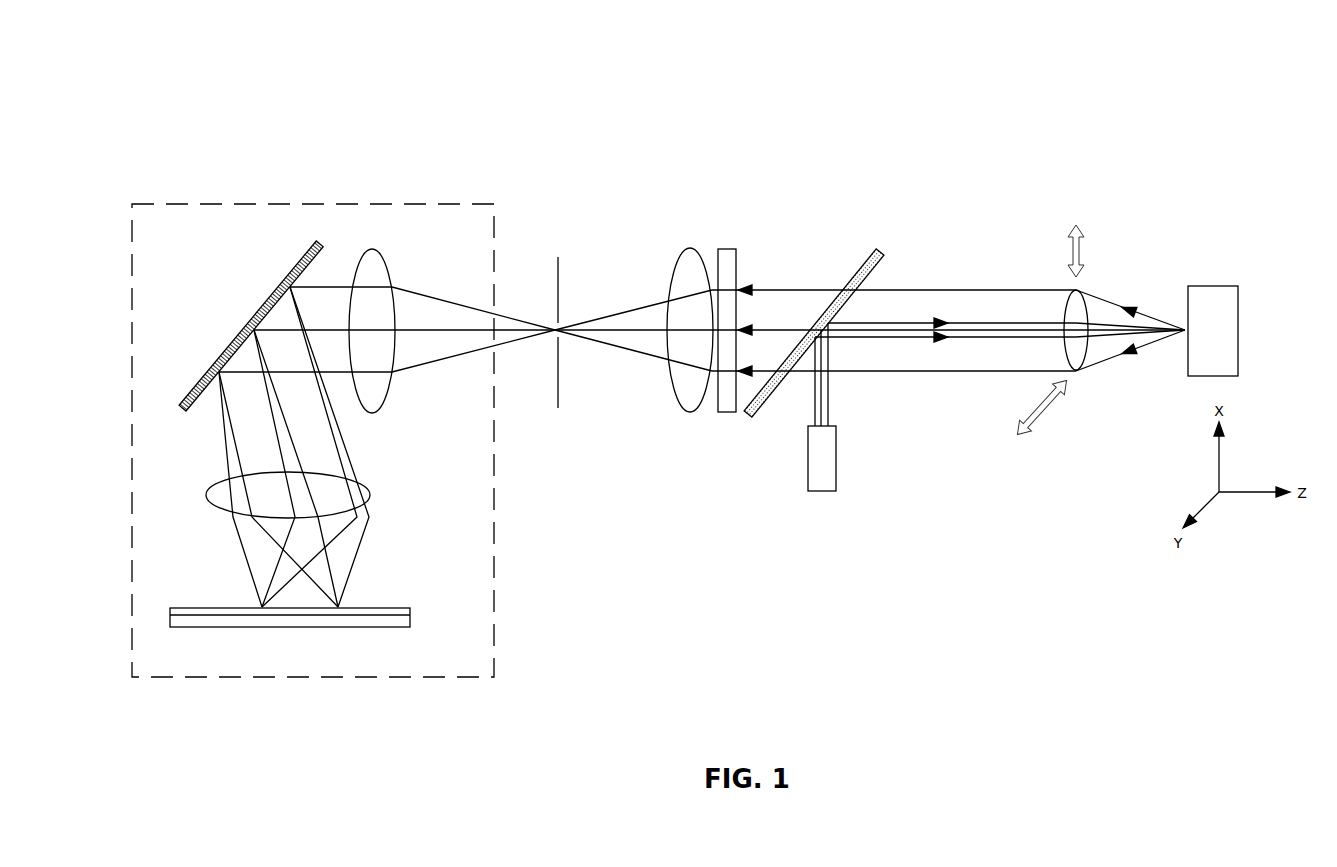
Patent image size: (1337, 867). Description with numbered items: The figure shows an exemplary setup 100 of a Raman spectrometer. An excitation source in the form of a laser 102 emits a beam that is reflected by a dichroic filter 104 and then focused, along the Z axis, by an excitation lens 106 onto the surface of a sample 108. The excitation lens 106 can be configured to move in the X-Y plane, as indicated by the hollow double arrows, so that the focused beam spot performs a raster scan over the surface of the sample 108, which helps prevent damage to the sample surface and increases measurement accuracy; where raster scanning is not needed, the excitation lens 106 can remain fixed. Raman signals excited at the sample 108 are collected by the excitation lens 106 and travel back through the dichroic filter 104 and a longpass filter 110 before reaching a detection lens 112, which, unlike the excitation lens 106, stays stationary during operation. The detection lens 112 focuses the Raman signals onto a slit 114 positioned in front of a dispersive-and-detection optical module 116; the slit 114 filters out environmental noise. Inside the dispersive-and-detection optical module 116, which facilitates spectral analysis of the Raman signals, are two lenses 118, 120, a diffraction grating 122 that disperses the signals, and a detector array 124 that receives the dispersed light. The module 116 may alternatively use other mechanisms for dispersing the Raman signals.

The setup 100 is at (245, 90).
The laser 102 is at (820, 491).
The dichroic filter 104 is at (889, 250).
The excitation lens 106 is at (1078, 373).
The sample 108 is at (1215, 286).
The longpass filter 110 is at (737, 263).
The detection lens 112 is at (690, 413).
The slit 114 is at (558, 257).
The dispersive-and-detection optical module 116 is at (368, 203).
The lens 118 is at (388, 268).
The lens 120 is at (372, 489).
The diffraction grating 122 is at (252, 315).
The detector array 124 is at (382, 606).